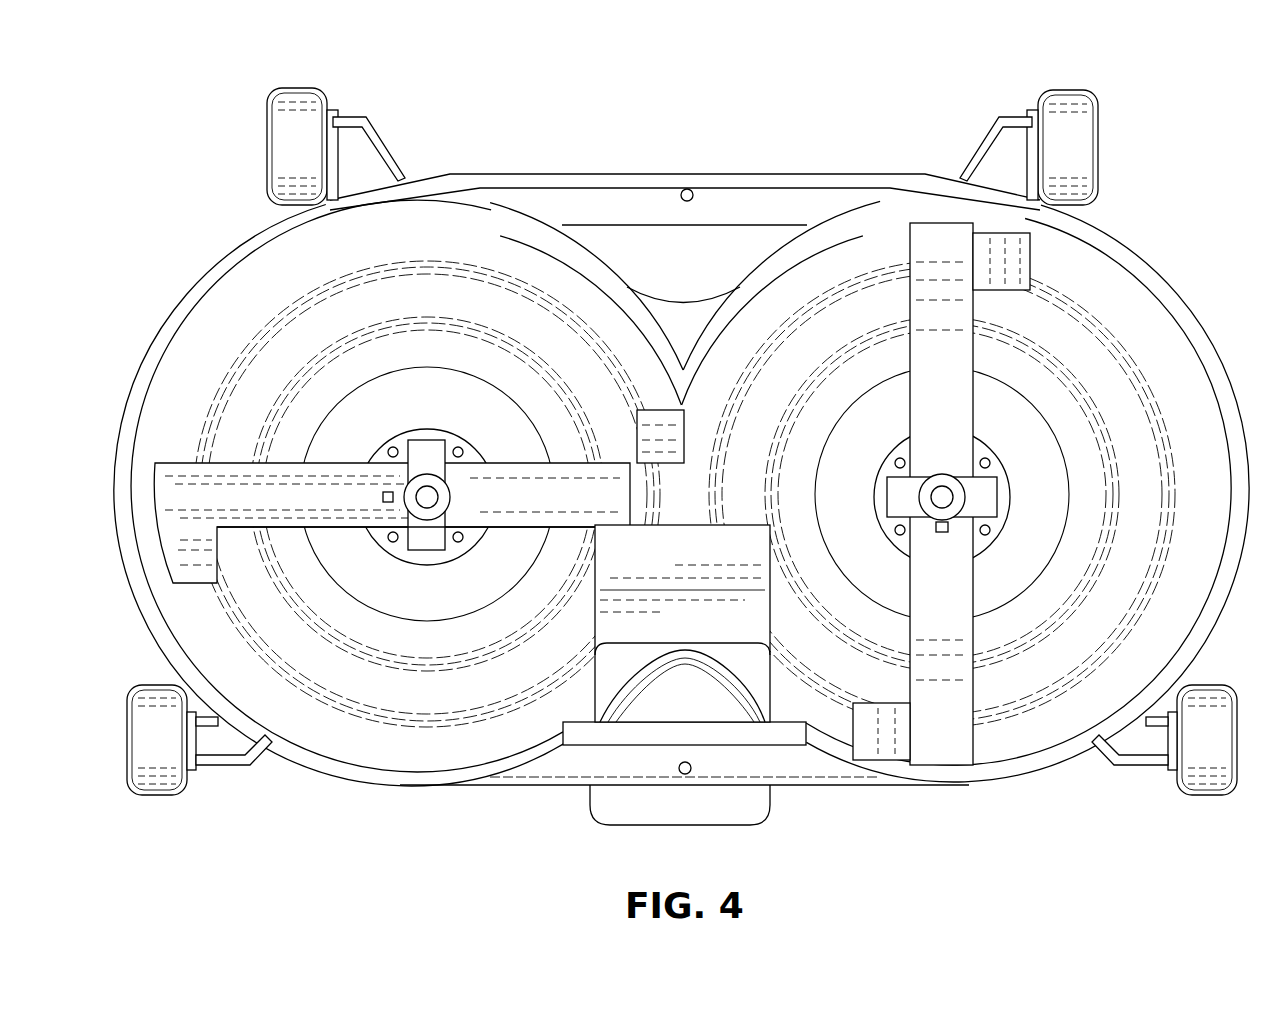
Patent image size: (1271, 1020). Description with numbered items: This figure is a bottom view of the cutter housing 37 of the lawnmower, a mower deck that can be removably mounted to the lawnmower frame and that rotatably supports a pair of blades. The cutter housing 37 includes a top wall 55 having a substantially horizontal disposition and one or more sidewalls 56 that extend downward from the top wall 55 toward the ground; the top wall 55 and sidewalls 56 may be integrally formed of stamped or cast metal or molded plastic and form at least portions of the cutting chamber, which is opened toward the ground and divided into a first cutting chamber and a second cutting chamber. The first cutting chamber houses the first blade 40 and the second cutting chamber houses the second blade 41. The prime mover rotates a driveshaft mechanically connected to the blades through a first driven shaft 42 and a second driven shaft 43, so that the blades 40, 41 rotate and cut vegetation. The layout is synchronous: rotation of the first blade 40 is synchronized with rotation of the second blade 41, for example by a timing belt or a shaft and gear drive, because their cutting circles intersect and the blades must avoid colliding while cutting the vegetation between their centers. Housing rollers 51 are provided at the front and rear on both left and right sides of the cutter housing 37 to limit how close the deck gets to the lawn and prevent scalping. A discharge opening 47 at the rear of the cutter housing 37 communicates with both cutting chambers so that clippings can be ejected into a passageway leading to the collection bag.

The cutter housing 37 is at (660, 170).
The first blade 40 is at (175, 470).
The second blade 41 is at (935, 247).
The first driven shaft 42 is at (432, 504).
The second driven shaft 43 is at (945, 482).
The discharge opening 47 is at (760, 680).
The housing roller 51 is at (297, 88).
The top wall 55 is at (243, 397).
The sidewall 56 is at (200, 312).